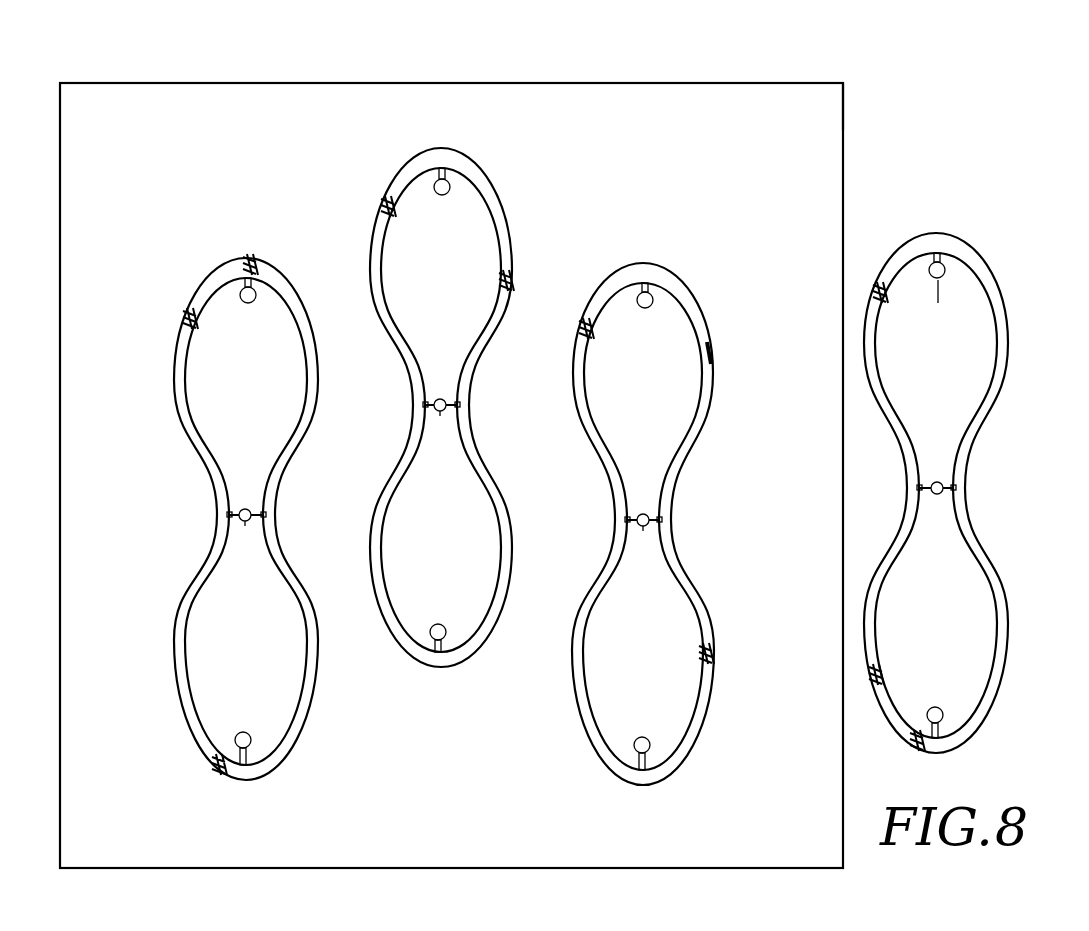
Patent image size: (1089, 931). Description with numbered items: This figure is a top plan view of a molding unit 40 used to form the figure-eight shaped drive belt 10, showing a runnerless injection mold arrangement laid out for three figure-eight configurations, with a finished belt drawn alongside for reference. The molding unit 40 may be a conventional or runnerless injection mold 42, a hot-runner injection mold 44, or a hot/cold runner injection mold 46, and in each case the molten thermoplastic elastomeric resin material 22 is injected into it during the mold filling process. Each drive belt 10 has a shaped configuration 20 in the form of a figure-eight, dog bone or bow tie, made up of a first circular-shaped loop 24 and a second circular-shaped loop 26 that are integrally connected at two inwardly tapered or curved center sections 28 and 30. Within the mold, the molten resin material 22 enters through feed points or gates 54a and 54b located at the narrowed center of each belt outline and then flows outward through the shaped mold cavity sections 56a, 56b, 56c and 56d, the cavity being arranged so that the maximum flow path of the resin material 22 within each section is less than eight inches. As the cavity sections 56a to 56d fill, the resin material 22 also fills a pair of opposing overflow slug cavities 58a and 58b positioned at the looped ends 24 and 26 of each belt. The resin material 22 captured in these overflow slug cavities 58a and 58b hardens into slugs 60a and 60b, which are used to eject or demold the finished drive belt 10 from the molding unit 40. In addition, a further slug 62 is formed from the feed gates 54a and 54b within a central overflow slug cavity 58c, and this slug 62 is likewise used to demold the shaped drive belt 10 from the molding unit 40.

The figure-eight shaped drive belt 10 is at (590, 466).
The shaped configuration 20 is at (1003, 289).
The thermoplastic elastomeric resin material 22 is at (186, 320).
The first circular-shaped loop 24 is at (247, 260).
The second circular-shaped loop 26 is at (214, 771).
The inwardly tapered or curved center section 28 is at (953, 489).
The inwardly tapered or curved center section 30 is at (919, 491).
The molding unit 40 is at (722, 82).
The runnerless injection mold 42 is at (901, 105).
The hot-runner injection mold 44 is at (901, 105).
The hot/cold runner injection mold 46 is at (798, 113).
The feed point/gate 54a is at (239, 515).
The feed point/gate 54b is at (256, 514).
The shaped mold cavity section 56a is at (177, 416).
The shaped mold cavity section 56b is at (315, 336).
The shaped mold cavity section 56c is at (303, 713).
The shaped mold cavity section 56d is at (175, 692).
The overflow slug cavity 58a is at (250, 303).
The overflow slug cavity 58b is at (243, 731).
The overflow slug cavity 58c is at (245, 522).
The slug 60a is at (255, 291).
The slug 60b is at (250, 744).
The slug 62 is at (245, 508).